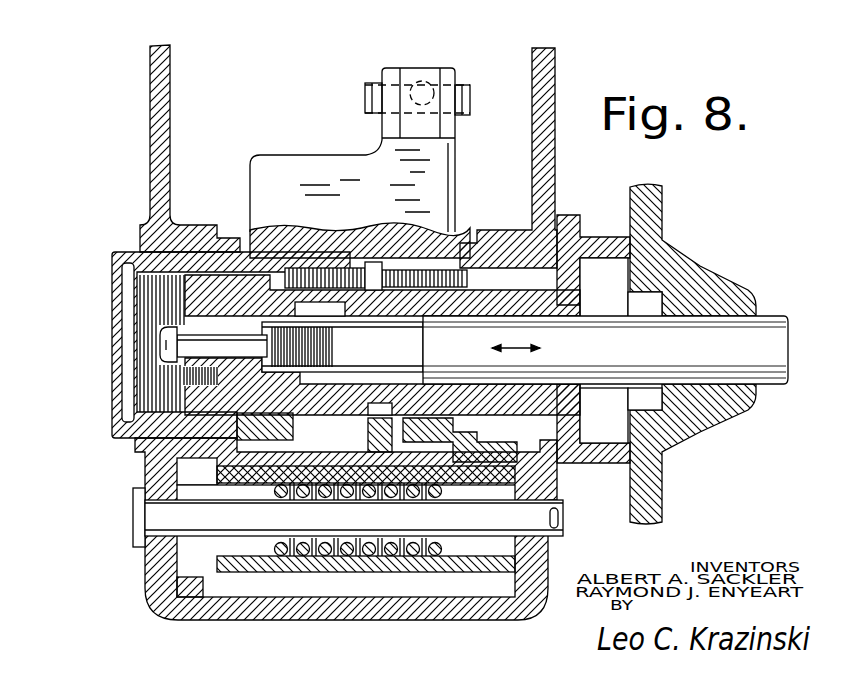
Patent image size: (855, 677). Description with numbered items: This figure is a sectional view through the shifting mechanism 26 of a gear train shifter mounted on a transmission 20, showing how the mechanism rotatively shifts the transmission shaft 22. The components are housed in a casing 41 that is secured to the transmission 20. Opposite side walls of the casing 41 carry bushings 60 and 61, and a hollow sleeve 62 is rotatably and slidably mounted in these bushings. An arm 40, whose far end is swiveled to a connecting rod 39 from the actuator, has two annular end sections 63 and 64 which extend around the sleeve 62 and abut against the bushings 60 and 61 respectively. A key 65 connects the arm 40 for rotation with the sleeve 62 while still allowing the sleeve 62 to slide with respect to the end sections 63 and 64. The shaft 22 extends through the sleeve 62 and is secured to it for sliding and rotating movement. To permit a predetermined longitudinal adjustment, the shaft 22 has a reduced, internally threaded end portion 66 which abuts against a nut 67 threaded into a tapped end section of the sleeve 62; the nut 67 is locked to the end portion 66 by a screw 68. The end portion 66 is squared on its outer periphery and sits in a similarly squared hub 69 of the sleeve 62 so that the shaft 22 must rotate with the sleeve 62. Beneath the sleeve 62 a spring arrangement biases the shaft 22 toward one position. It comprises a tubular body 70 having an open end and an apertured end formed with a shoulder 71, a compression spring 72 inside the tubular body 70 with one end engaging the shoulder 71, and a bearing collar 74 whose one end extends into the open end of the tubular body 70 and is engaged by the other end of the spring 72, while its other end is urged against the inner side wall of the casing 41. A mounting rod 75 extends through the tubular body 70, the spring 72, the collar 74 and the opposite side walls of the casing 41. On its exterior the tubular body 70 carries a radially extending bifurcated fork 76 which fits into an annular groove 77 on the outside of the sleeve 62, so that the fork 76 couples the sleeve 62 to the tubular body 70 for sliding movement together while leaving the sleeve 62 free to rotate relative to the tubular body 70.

The transmission 20 is at (668, 492).
The transmission shaft 22 is at (713, 327).
The shifting mechanism 26 is at (123, 503).
The connecting rod 39 is at (424, 68).
The arm 40 is at (435, 165).
The casing 41 is at (146, 136).
The bushing 60 is at (112, 257).
The bushing 61 is at (557, 258).
The hollow sleeve 62 is at (160, 393).
The annular end section 63 is at (270, 438).
The annular end section 64 is at (423, 428).
The key 65 is at (322, 272).
The reduced, internally threaded end portion 66 is at (380, 350).
The nut 67 is at (220, 373).
The screw 68 is at (160, 340).
The squared hub 69 is at (320, 380).
The tubular body 70 is at (387, 573).
The shoulder 71 is at (470, 555).
The compression spring 72 is at (317, 543).
The bearing collar 74 is at (185, 557).
The mounting rod 75 is at (572, 496).
The bifurcated fork 76 is at (380, 435).
The annular groove 77 is at (383, 283).